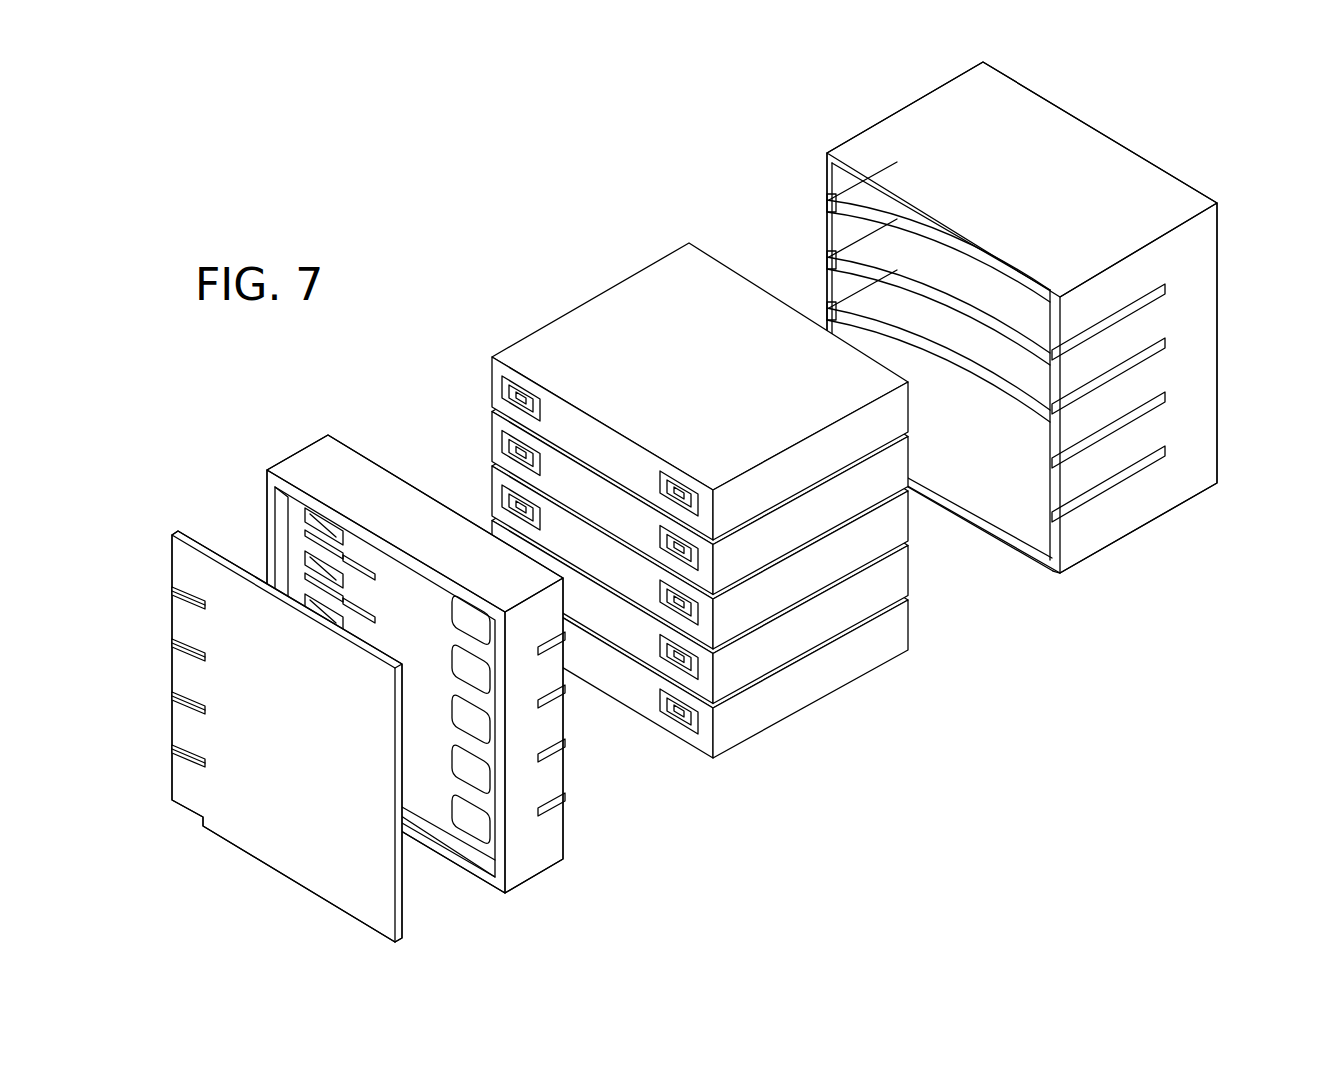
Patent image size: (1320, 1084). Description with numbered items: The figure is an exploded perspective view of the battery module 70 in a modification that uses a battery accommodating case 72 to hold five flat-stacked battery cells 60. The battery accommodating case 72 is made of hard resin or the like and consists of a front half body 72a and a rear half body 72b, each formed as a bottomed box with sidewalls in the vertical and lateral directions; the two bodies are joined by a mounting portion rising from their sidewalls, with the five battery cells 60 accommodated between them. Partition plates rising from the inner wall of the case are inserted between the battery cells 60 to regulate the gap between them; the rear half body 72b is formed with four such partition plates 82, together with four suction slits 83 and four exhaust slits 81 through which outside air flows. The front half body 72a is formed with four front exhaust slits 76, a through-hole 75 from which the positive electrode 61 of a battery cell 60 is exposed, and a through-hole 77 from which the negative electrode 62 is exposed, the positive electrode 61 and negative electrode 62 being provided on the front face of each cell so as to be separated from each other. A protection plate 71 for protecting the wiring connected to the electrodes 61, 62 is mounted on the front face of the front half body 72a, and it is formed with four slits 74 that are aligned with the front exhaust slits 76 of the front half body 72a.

The battery module 70 is at (521, 228).
The battery cell 60 is at (815, 680).
The positive electrode 61 is at (490, 410).
The negative electrode 62 is at (677, 729).
The protection plate 71 is at (255, 835).
The battery accommodating case 72 is at (734, 499).
The front half body 72a is at (545, 882).
The rear half body 72b is at (1150, 500).
The slits 74 is at (166, 588).
The through-hole 75 is at (320, 574).
The front exhaust slits 76 is at (316, 604).
The through-hole 77 is at (458, 772).
The exhaust slits 81 is at (822, 206).
The partition plates 82 is at (962, 370).
The suction slits 83 is at (1146, 319).